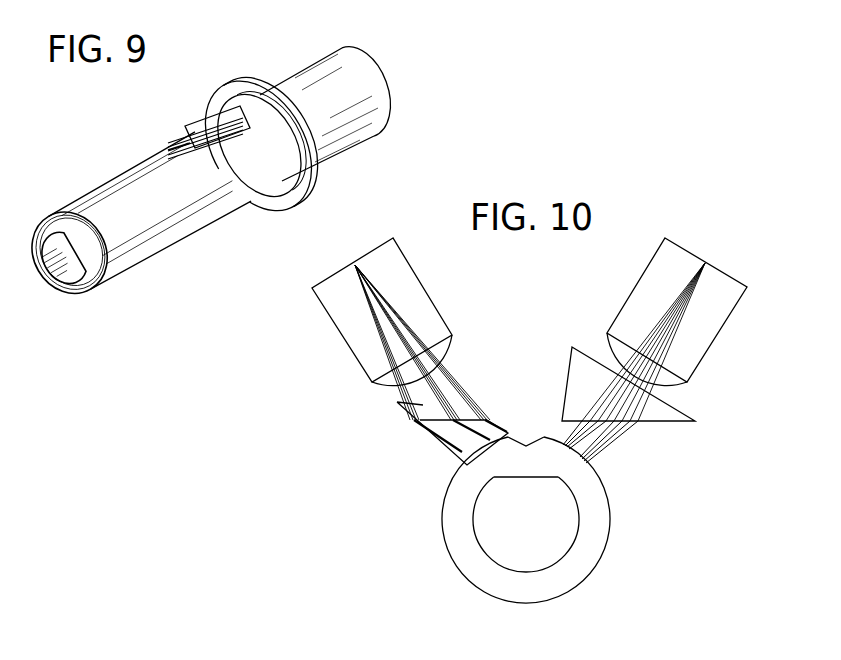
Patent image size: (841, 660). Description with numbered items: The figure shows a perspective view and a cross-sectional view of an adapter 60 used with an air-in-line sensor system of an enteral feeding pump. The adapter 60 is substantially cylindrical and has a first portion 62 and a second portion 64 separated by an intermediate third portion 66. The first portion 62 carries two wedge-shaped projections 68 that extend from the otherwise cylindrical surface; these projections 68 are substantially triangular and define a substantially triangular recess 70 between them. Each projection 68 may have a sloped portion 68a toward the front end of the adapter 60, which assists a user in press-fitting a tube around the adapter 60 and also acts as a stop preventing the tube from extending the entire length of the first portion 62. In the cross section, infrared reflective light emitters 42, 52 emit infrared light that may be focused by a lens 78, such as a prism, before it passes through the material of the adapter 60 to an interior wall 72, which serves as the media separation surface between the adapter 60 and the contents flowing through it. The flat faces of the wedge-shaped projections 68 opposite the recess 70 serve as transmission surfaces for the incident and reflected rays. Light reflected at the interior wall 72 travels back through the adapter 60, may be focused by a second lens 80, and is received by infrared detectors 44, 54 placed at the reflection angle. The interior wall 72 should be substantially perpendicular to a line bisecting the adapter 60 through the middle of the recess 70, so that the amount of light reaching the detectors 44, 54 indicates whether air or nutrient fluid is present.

In FIG. 9, the adapter 60 is at (284, 31).
In FIG. 10, the adapter 60 is at (611, 527).
In FIG. 9, the first portion 62 is at (142, 232).
In FIG. 9, the second portion 64 is at (244, 62).
In FIG. 9, the intermediate third portion 66 is at (216, 82).
In FIG. 9, the wedge-shaped projections 68 is at (159, 121).
In FIG. 10, the wedge-shaped projections 68 is at (508, 433).
In FIG. 9, the sloped portion 68a is at (195, 152).
In FIG. 10, the infrared reflective light emitter 42 is at (363, 320).
In FIG. 10, the infrared reflective light emitter 52 is at (342, 340).
In FIG. 10, the infrared detector 44 is at (677, 281).
In FIG. 10, the infrared detector 54 is at (687, 248).
In FIG. 10, the recess 70 is at (523, 418).
In FIG. 10, the interior wall 72 is at (533, 482).
In FIG. 10, the lens 78 is at (423, 407).
In FIG. 10, the lens 80 is at (653, 412).